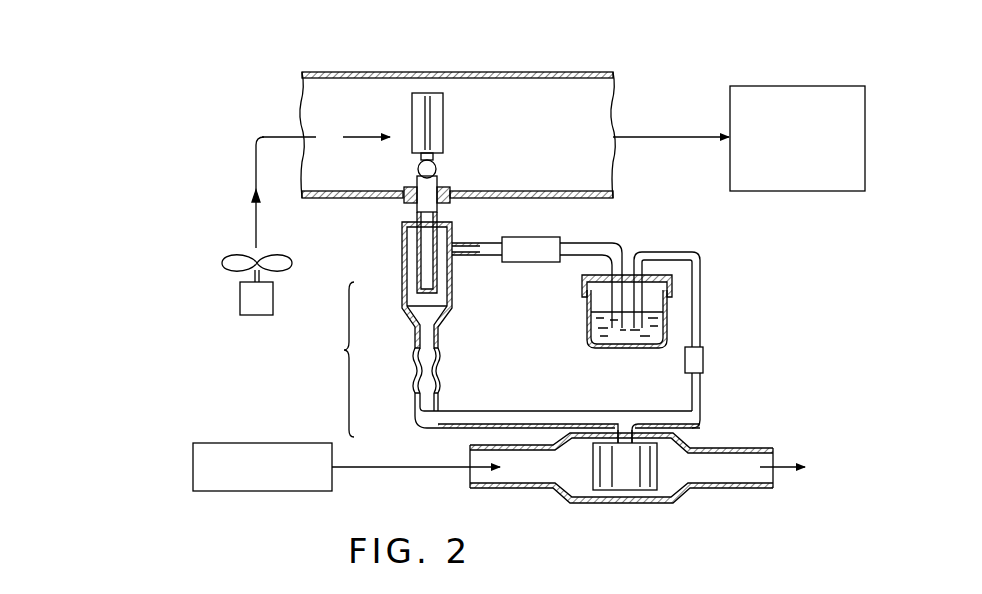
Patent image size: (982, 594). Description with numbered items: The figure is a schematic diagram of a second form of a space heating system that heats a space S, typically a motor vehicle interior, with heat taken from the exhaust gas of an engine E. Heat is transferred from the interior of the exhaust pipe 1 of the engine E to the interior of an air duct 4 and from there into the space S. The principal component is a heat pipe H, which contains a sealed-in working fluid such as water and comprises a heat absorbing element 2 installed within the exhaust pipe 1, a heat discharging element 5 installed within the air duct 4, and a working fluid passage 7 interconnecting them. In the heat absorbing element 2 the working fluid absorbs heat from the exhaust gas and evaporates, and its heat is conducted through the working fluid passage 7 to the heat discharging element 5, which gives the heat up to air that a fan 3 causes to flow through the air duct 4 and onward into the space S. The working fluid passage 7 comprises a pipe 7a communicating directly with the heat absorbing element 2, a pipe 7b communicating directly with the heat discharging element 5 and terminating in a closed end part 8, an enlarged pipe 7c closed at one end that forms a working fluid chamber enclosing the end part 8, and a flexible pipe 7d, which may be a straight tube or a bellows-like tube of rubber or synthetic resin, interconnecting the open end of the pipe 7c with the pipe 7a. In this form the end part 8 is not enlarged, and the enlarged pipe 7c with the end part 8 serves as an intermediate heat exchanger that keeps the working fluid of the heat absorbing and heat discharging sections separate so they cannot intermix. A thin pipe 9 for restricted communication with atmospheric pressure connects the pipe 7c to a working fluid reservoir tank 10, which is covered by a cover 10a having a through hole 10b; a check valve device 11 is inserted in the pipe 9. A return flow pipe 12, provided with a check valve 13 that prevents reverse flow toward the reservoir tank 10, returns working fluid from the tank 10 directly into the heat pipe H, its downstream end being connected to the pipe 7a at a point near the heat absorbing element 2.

The exhaust pipe 1 is at (536, 490).
The heat absorbing element 2 is at (652, 478).
The fan 3 is at (238, 258).
The air duct 4 is at (600, 72).
The heat discharging element 5 is at (443, 126).
The working fluid passage 7 is at (424, 325).
The pipe 7a is at (523, 411).
The pipe 7b is at (416, 199).
The enlarged pipe 7c is at (452, 289).
The flexible pipe 7d is at (415, 369).
The closed end part 8 is at (417, 265).
The thin pipe 9 is at (584, 243).
The working fluid reservoir tank 10 is at (590, 330).
The cover 10a is at (630, 272).
The through hole 10b is at (592, 277).
The check valve device 11 is at (529, 237).
The return flow pipe 12 is at (700, 296).
The check valve 13 is at (703, 358).
The engine E is at (263, 443).
The space S is at (758, 86).
The heat pipe H is at (334, 367).